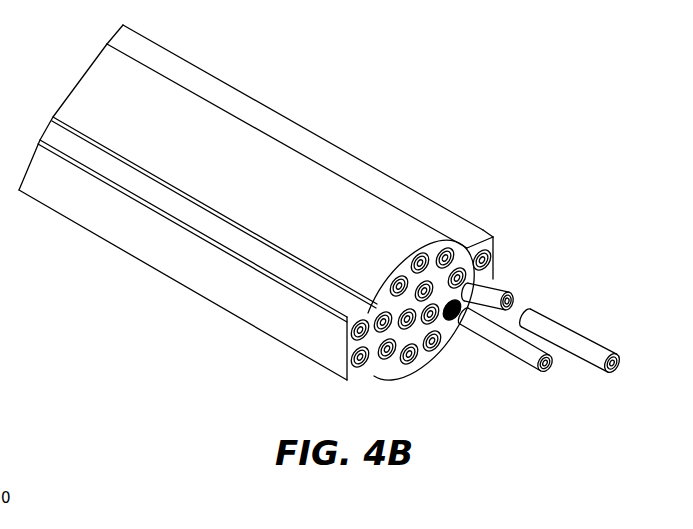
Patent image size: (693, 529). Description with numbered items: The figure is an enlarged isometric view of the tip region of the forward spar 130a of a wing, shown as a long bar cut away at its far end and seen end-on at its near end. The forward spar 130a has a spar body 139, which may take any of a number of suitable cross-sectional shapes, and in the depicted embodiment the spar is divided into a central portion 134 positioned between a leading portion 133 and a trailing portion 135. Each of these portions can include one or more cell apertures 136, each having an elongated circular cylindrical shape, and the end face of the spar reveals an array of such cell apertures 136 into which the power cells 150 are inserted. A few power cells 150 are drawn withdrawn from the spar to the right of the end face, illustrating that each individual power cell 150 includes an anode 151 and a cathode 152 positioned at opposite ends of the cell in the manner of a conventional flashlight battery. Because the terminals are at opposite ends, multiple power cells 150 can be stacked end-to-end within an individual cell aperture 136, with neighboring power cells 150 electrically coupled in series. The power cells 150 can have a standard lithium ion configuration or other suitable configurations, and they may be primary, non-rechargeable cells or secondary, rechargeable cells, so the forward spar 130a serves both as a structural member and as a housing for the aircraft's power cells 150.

The forward spar 130a is at (262, 85).
The leading portion 133 is at (193, 215).
The central portion 134 is at (84, 92).
The trailing portion 135 is at (353, 165).
The cell aperture 136 is at (462, 318).
The spar body 139 is at (262, 240).
The power cell 150 is at (601, 346).
The anode 151 is at (622, 368).
The cathode 152 is at (528, 308).